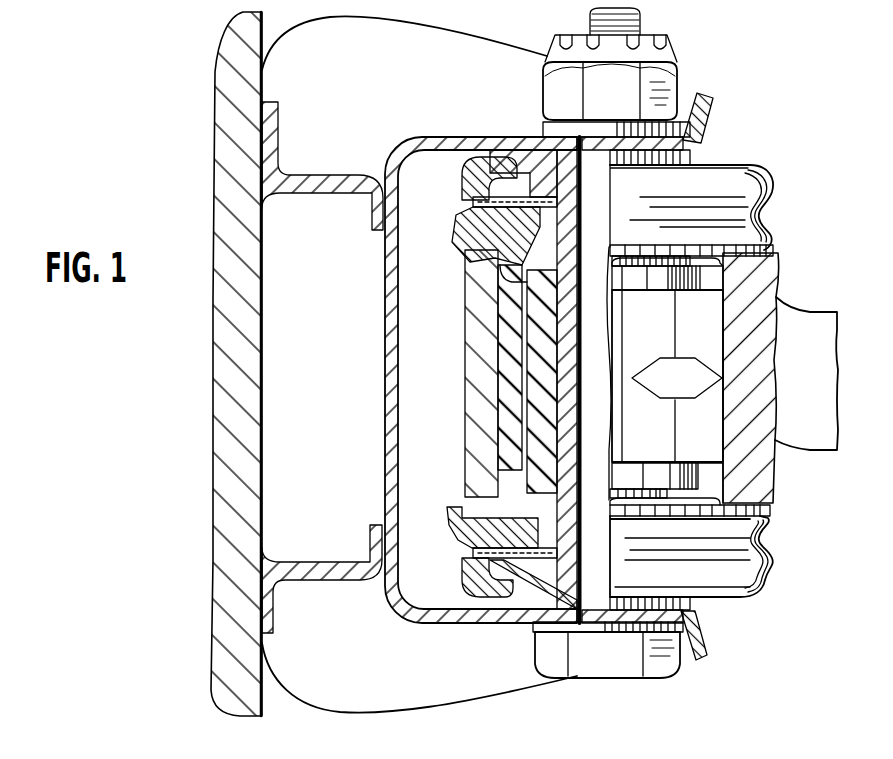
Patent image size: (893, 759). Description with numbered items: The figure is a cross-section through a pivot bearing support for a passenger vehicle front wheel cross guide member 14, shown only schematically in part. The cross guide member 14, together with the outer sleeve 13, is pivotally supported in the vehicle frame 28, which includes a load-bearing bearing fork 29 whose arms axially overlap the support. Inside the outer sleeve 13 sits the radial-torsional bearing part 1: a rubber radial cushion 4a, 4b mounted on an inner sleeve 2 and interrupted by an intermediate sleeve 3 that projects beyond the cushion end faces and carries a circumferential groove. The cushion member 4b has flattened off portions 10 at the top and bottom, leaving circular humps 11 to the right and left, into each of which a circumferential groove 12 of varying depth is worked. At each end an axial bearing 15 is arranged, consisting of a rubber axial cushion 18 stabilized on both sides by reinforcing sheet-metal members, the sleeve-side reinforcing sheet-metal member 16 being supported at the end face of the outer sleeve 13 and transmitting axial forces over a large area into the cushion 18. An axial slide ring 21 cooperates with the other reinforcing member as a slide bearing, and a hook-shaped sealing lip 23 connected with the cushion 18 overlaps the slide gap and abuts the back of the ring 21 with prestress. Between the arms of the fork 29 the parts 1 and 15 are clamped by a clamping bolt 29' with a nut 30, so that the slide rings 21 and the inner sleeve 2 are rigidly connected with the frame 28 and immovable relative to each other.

The radial-torsional bearing part 1 is at (513, 283).
The inner sleeve 2 is at (565, 466).
The intermediate sleeve 3 is at (633, 477).
The radial cushion 4a is at (545, 417).
The radial cushion member 4b is at (510, 433).
The flattened off portions 10 is at (615, 335).
The humps 11 is at (707, 338).
The groove 12 is at (686, 390).
The outer sleeve 13 is at (475, 390).
The cross guide member 14 is at (817, 328).
The axial bearing 15 is at (786, 184).
The reinforcing sheet-metal member 16 is at (453, 253).
The axial cushion 18 is at (768, 237).
The axial slide ring 21 is at (542, 158).
The sealing lip 23 is at (748, 167).
The vehicle frame 28 is at (264, 423).
The bearing fork 29 is at (472, 367).
The clamping bolt 29' is at (608, 625).
The nut 30 is at (665, 85).